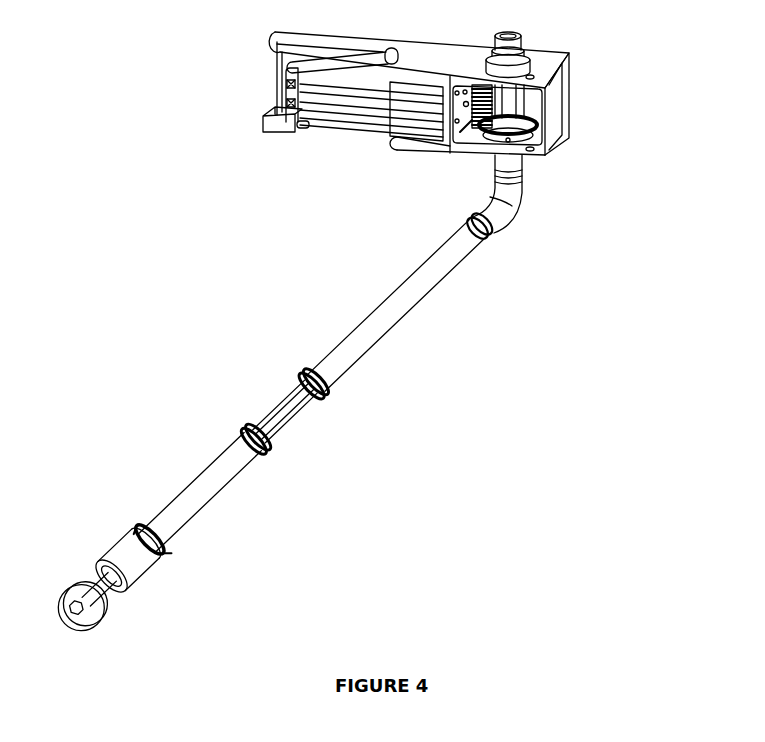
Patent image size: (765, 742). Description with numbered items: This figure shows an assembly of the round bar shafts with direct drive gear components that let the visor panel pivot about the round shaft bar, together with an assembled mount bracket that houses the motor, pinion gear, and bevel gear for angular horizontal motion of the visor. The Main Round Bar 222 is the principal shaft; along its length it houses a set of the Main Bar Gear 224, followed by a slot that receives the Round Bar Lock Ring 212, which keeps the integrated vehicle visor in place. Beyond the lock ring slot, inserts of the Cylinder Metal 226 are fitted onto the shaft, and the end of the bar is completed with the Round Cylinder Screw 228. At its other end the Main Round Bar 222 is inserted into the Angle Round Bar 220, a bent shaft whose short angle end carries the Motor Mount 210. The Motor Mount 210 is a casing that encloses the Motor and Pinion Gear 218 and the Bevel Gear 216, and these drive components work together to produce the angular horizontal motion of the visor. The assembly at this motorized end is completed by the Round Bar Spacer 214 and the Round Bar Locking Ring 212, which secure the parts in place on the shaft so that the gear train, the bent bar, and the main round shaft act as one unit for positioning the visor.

The Motor Mount 210 is at (290, 57).
The Round Bar Lock Ring 212 is at (531, 62).
The Round Bar Spacer 214 is at (572, 72).
The Bevel Gear 216 is at (571, 146).
The Motor and Pinion Gear 218 is at (380, 100).
The Angle Round Bar 220 is at (494, 210).
The Main Round Bar 222 is at (403, 298).
The Main Bar Gear 224 is at (240, 425).
The Cylinder Metal 226 is at (123, 537).
The Round Cylinder Screw 228 is at (90, 607).